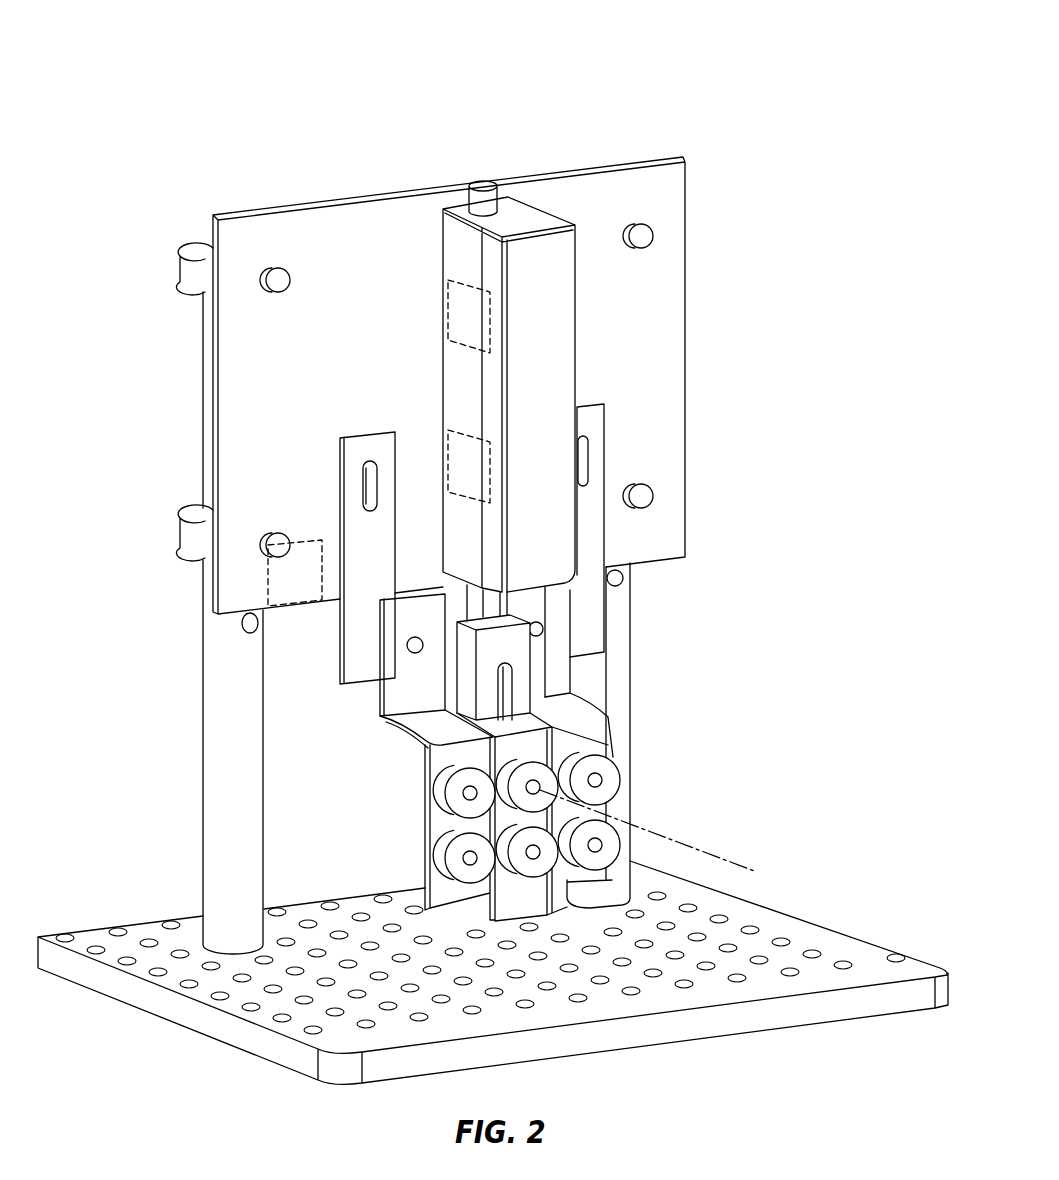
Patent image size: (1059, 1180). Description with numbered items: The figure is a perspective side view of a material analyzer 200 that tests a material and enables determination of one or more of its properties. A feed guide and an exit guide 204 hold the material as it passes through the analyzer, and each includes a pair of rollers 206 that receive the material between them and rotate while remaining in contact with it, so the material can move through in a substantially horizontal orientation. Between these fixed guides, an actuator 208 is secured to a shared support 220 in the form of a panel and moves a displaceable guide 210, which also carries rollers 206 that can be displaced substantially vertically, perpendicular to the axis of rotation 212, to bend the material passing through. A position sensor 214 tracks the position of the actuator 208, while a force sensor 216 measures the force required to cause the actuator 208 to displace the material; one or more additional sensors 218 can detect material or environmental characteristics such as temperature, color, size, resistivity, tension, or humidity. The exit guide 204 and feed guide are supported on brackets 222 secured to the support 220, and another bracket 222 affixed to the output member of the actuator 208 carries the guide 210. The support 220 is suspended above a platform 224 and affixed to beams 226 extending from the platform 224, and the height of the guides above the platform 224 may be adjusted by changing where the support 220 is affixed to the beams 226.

The material analyzer 200 is at (888, 58).
The exit guide 204 is at (612, 778).
The rollers 206 is at (447, 795).
The actuator 208 is at (460, 237).
The displaceable guide 210 is at (540, 767).
The axis of rotation 212 is at (675, 843).
The position sensor 214 is at (447, 457).
The force sensor 216 is at (443, 305).
The additional sensor 218 is at (266, 565).
The shared support 220 is at (256, 236).
The brackets 222 is at (543, 635).
The platform 224 is at (838, 948).
The beams 226 is at (232, 705).